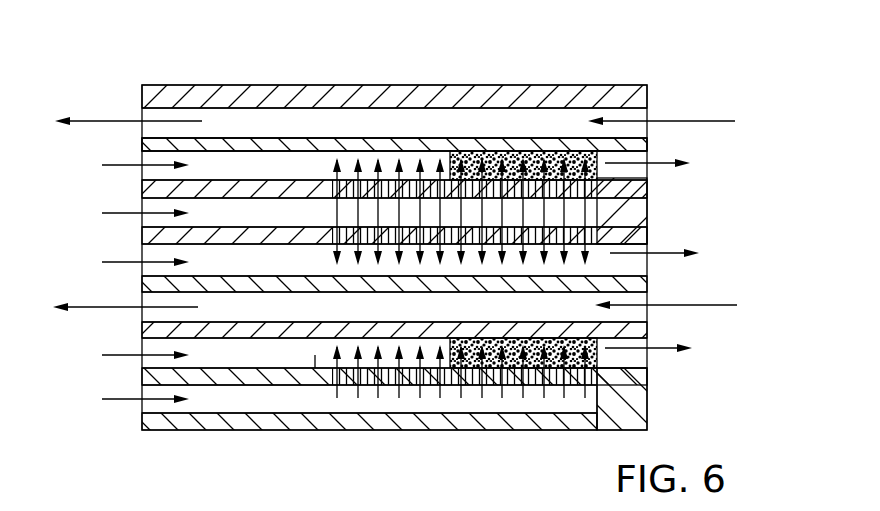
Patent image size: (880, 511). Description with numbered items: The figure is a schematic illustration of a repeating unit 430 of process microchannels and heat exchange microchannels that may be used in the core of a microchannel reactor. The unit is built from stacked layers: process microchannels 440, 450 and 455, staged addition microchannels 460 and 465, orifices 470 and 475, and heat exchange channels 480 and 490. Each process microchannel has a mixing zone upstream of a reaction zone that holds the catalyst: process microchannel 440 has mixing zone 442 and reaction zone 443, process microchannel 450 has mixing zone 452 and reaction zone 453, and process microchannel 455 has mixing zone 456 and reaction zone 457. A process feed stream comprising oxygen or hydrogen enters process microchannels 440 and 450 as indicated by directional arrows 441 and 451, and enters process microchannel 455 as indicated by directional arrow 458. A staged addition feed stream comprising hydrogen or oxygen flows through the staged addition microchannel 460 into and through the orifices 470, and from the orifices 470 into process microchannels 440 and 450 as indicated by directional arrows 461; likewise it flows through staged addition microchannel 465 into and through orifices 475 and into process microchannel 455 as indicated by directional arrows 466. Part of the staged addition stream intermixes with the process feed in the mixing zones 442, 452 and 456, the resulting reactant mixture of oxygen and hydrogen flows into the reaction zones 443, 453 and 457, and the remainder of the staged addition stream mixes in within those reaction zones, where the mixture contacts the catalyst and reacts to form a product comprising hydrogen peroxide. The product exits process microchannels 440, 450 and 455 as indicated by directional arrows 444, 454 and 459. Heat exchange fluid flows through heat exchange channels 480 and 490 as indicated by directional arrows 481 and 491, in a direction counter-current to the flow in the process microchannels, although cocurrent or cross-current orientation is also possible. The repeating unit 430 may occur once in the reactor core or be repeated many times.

The repeating unit 430 is at (208, 72).
The heat exchange channel 490 is at (398, 122).
The directional arrow 491 is at (113, 120).
The process microchannel 450 is at (255, 170).
The directional arrow 451 is at (120, 165).
The mixing zone 452 is at (440, 165).
The reaction zone 453 is at (550, 205).
The directional arrows 461 is at (563, 148).
The staged addition microchannel 460 is at (282, 212).
The directional arrow 454 is at (660, 160).
The orifices 470 is at (592, 187).
The directional arrow 441 is at (120, 262).
The directional arrow 444 is at (670, 255).
The directional arrow 481 is at (110, 307).
The process microchannel 440 is at (238, 258).
The mixing zone 442 is at (393, 260).
The reaction zone 443 is at (577, 262).
The heat exchange channel 480 is at (313, 307).
The directional arrow 458 is at (122, 355).
The directional arrow 459 is at (662, 348).
The mixing zone 456 is at (413, 350).
The process microchannel 455 is at (318, 372).
The orifices 475 is at (487, 383).
The reaction zone 457 is at (538, 380).
The staged addition microchannel 465 is at (390, 397).
The directional arrows 466 is at (125, 399).